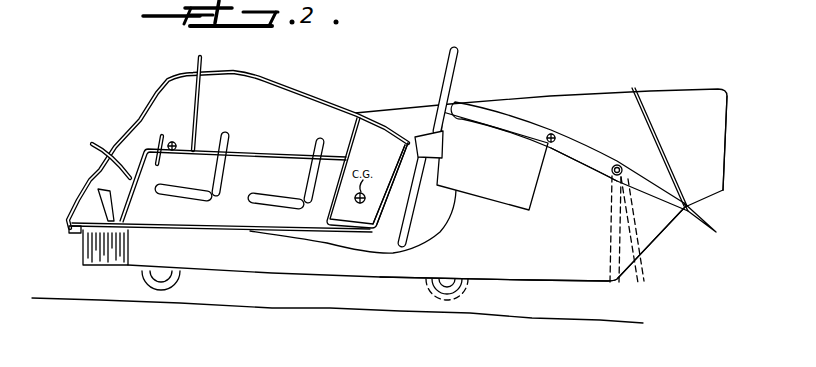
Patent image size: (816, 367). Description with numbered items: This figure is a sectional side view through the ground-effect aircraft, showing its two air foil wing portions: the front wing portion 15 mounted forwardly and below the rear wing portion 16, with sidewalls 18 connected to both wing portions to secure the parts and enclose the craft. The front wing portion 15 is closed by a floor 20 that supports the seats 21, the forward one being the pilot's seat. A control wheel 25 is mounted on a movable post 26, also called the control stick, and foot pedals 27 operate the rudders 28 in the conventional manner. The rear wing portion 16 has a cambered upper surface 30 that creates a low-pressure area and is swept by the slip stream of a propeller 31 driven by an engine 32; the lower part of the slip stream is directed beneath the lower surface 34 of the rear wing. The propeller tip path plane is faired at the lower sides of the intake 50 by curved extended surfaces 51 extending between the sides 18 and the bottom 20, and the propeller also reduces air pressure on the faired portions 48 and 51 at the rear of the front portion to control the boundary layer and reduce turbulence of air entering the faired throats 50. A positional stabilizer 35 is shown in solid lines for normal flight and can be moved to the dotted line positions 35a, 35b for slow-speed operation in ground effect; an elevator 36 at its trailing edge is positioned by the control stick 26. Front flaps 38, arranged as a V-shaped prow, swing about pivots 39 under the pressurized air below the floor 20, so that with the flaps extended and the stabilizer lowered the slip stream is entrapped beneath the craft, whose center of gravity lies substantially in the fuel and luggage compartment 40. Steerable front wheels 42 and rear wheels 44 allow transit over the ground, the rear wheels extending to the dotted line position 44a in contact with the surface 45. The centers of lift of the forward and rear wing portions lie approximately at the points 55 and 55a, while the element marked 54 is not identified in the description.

The front wing portion 15 is at (128, 92).
The rear wing portion 16 is at (575, 104).
The sidewalls 18 is at (499, 254).
The floor 20 is at (198, 223).
The seats 21 is at (163, 93).
The control wheel 25 is at (156, 143).
The movable post 26 is at (127, 172).
The foot pedals 27 is at (95, 190).
The rudders 28 is at (674, 98).
The cambered upper surface 30 is at (583, 151).
The propeller 31 is at (452, 77).
The engine 32 is at (492, 161).
The lower surface 34 is at (563, 160).
The positional stabilizer 35 is at (653, 187).
The dotted line position of stabilizer 35a is at (605, 252).
The dotted line position of stabilizer 35b is at (636, 217).
The elevator 36 is at (718, 231).
The front flaps 38 is at (82, 248).
The pivots 39 is at (68, 231).
The fuel and luggage compartment 40 is at (369, 120).
The steerable front wheels 42 is at (140, 270).
The rear wheels 44 is at (430, 281).
The dotted line position of rear wheels 44a is at (452, 300).
The surface 45 is at (537, 308).
The faired portions 48 is at (388, 205).
The intake 50 is at (413, 110).
The curved extended surfaces 51 is at (430, 231).
The mast 54 is at (200, 73).
The center of lift of forward wing portion 55 is at (172, 140).
The center of lift of rear wing portion 55a is at (550, 134).